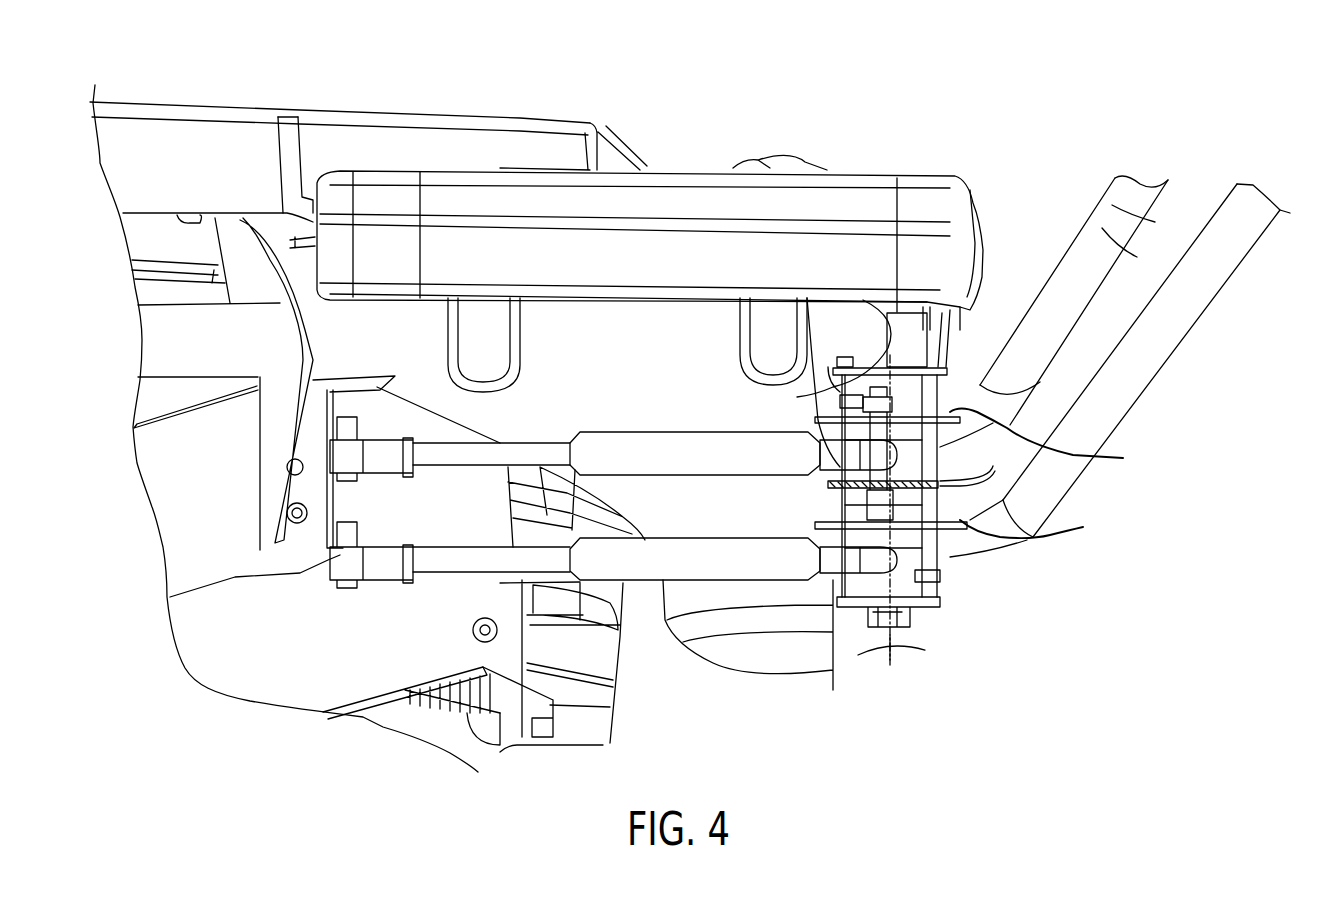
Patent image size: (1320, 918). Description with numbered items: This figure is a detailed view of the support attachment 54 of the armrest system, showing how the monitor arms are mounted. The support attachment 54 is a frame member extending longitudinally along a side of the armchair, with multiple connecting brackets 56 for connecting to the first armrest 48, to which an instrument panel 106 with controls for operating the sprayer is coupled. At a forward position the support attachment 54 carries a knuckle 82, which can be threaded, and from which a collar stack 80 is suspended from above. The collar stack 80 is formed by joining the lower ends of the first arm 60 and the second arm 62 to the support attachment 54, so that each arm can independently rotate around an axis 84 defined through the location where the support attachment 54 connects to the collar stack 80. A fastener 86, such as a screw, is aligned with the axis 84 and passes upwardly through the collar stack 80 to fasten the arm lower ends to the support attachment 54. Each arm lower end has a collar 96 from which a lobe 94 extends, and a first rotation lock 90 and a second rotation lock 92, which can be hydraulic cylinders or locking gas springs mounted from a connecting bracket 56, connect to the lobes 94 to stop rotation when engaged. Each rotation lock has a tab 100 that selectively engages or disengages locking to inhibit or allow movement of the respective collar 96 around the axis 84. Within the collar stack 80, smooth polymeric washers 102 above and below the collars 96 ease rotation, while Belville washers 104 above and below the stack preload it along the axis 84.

The first armrest 48 is at (282, 108).
The support attachment 54 is at (183, 363).
The connecting bracket 56 is at (183, 103).
The first arm 60 is at (1067, 315).
The second arm 62 is at (1113, 407).
The collar stack 80 is at (853, 632).
The knuckle 82 is at (903, 320).
The axis 84 is at (887, 650).
The fastener 86 is at (907, 617).
The first rotation lock 90 is at (712, 453).
The second rotation lock 92 is at (720, 570).
The lobe 94 is at (1050, 476).
The collar 96 is at (850, 400).
The tab 100 is at (397, 562).
The smooth polymeric washer 102 is at (852, 403).
The Belville washer 104 is at (880, 367).
The instrument panel 106 is at (643, 195).